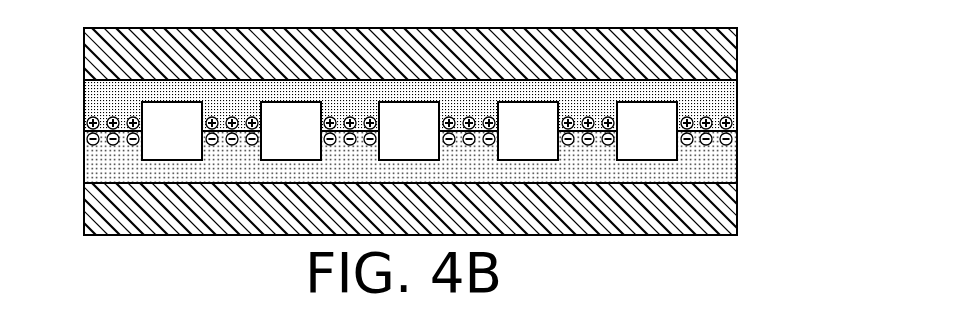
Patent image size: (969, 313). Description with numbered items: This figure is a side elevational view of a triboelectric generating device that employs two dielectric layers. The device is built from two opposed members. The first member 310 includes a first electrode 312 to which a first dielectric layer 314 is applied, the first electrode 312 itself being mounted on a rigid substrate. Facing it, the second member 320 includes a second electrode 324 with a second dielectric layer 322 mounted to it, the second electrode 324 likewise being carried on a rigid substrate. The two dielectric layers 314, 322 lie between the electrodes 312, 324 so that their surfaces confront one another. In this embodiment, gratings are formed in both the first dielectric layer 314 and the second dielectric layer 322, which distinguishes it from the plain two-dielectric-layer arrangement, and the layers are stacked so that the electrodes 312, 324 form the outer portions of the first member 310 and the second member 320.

The first member 310 is at (414, 184).
The first electrode 312 is at (84, 203).
The first dielectric layer 314 is at (84, 157).
The second member 320 is at (414, 82).
The second dielectric layer 322 is at (84, 98).
The second electrode 324 is at (84, 52).